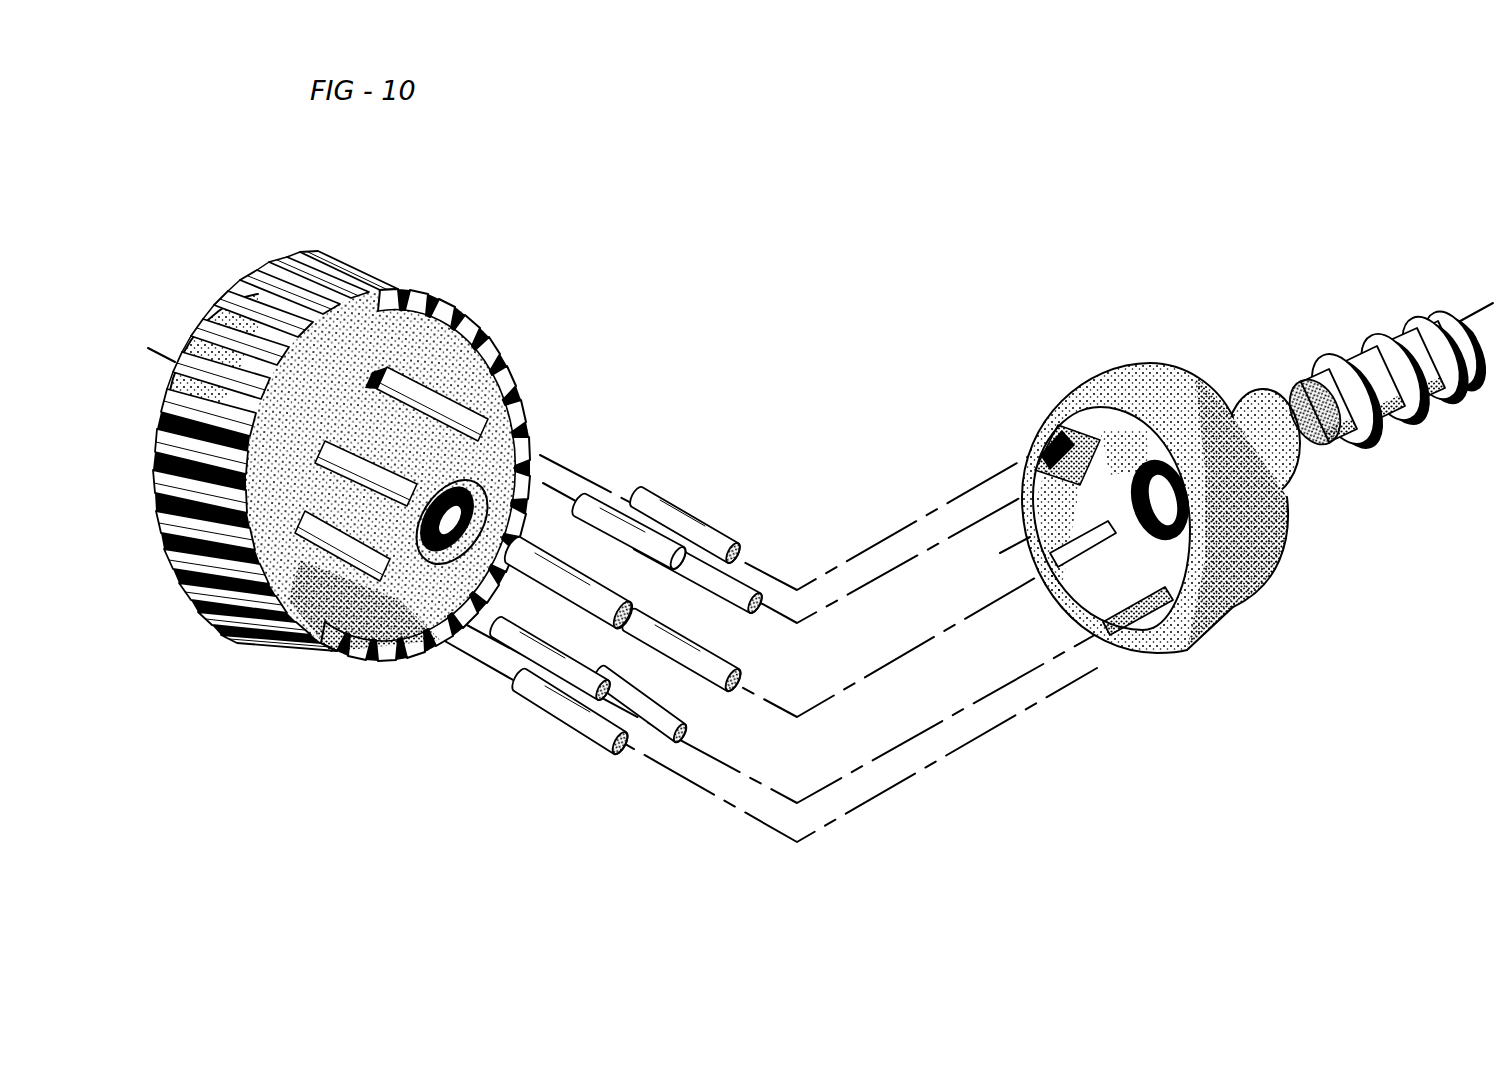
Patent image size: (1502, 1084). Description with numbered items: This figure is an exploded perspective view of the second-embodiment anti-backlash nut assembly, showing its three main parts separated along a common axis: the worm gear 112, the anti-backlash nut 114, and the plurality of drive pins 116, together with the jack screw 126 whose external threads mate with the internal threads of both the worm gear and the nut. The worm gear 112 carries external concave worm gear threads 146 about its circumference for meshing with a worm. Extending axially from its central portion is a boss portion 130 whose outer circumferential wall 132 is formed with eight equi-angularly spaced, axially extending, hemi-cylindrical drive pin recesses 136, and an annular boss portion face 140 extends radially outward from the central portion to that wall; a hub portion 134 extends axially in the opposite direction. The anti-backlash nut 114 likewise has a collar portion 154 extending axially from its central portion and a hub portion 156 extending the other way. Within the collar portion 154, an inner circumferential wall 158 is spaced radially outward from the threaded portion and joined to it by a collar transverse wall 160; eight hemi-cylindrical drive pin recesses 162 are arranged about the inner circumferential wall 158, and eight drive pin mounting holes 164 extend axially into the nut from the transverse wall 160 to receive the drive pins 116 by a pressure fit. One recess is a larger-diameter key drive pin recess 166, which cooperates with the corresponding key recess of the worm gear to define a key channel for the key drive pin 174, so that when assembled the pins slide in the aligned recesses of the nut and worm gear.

The worm gear 112 is at (402, 456).
The anti-backlash nut 114 is at (1127, 474).
The drive pins 116 is at (742, 588).
The jack screw 126 is at (1340, 340).
The boss portion 130 is at (532, 443).
The outer circumferential wall 132 is at (453, 407).
The hub portion 134 is at (213, 340).
The drive pin recesses 136 is at (400, 628).
The annular boss portion face 140 is at (470, 373).
The external concave worm gear threads 146 is at (365, 288).
The collar portion 154 is at (1160, 380).
The hub portion 156 is at (1244, 410).
The inner circumferential wall 158 is at (1050, 515).
The collar transverse wall 160 is at (1152, 553).
The drive pin recesses 162 is at (1180, 637).
The drive pin mounting holes 164 is at (440, 627).
The key drive pin recess 166 is at (1057, 433).
The key drive pin 174 is at (572, 580).